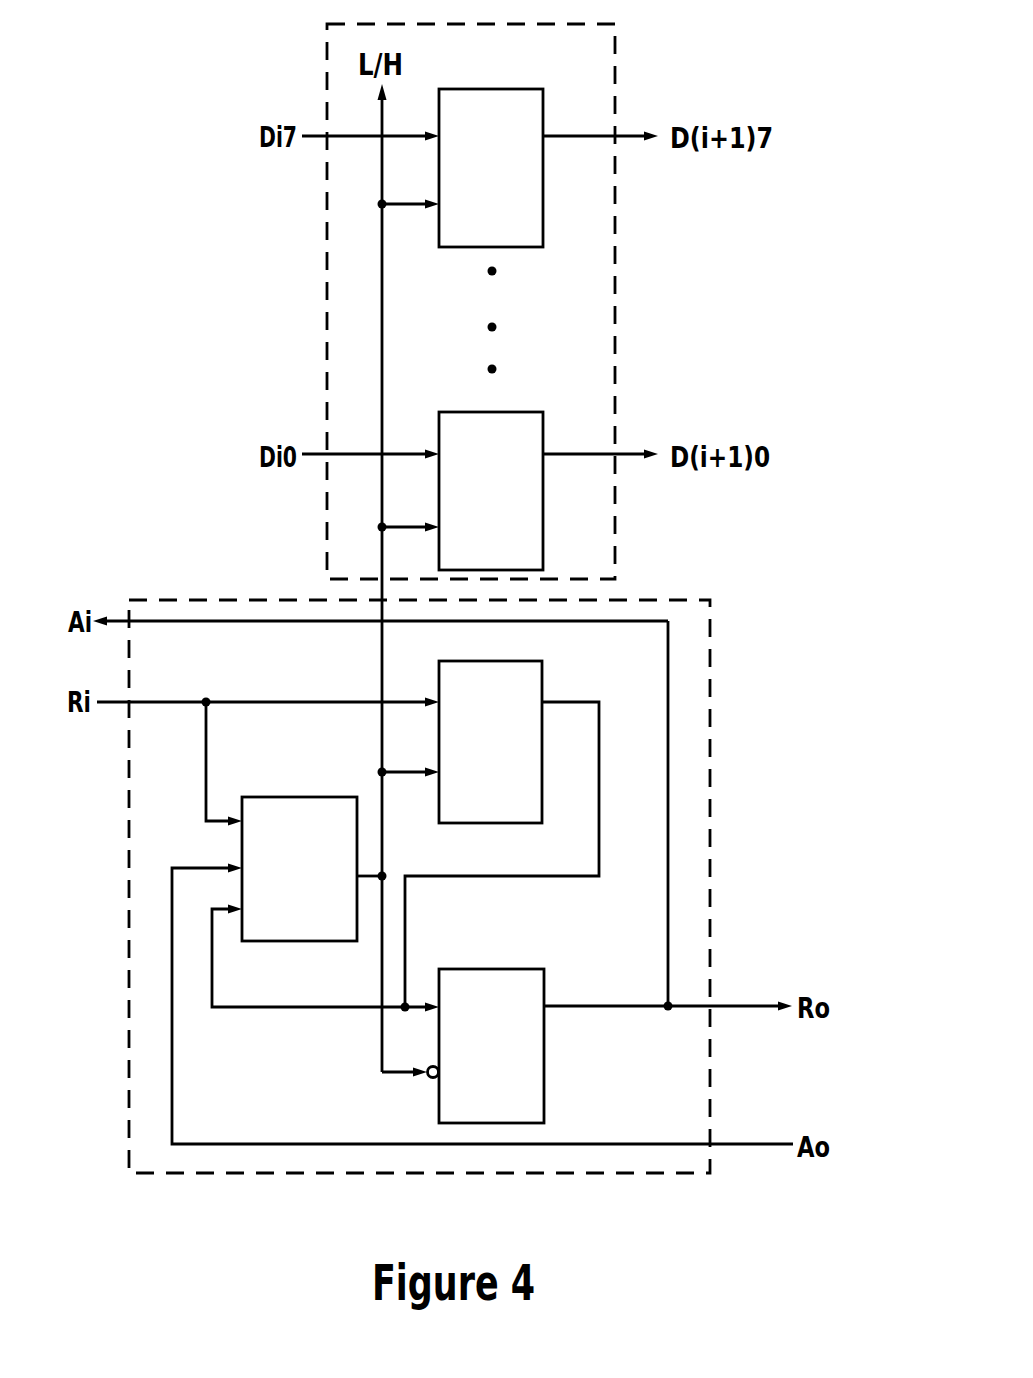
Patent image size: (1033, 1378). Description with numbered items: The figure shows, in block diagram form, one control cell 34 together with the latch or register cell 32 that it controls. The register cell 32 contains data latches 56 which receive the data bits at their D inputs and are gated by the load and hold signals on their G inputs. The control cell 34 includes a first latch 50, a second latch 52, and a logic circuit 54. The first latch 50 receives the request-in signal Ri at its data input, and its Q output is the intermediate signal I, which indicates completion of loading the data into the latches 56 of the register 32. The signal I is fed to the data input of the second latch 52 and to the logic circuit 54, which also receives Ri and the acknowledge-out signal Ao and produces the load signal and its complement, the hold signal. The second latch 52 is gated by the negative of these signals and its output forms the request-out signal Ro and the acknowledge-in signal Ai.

The latch (register cell) 32 is at (497, 301).
The control cell 34 is at (446, 886).
The first latch 50 is at (497, 823).
The second latch 52 is at (544, 1074).
The logic circuit 54 is at (300, 941).
The latches 56 is at (543, 98).